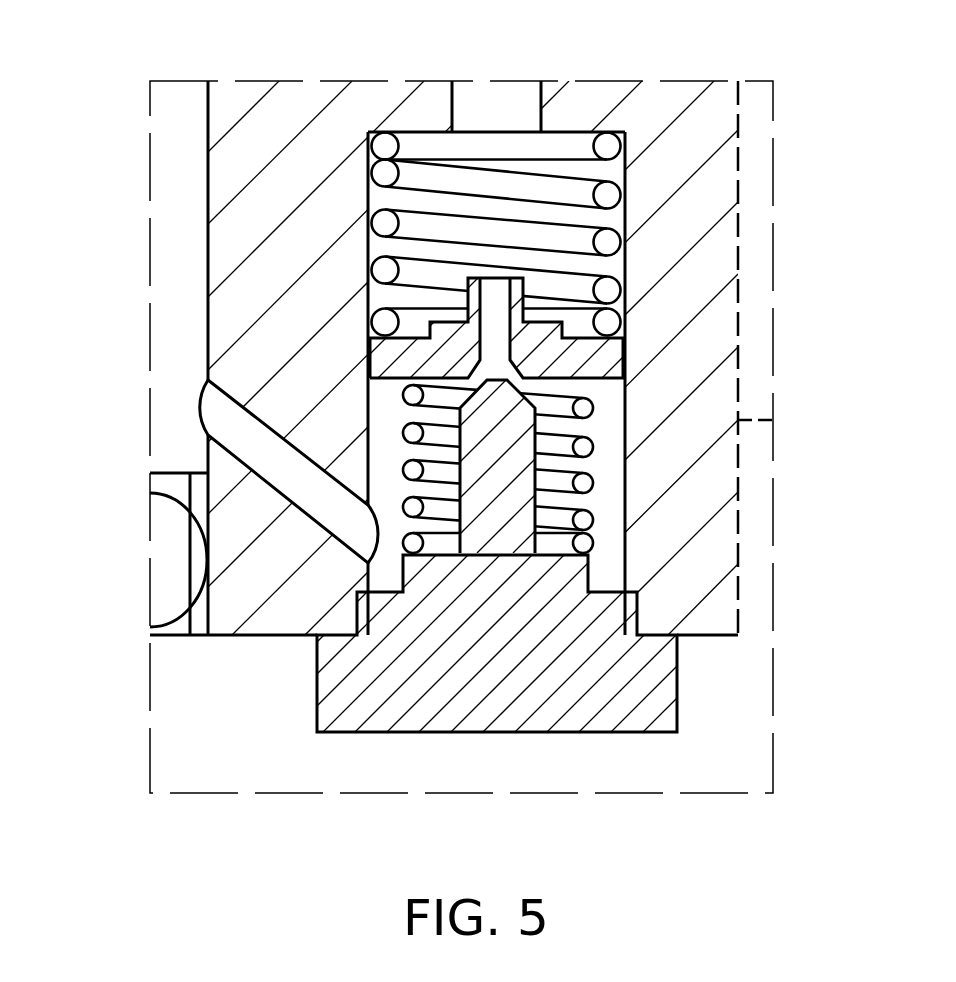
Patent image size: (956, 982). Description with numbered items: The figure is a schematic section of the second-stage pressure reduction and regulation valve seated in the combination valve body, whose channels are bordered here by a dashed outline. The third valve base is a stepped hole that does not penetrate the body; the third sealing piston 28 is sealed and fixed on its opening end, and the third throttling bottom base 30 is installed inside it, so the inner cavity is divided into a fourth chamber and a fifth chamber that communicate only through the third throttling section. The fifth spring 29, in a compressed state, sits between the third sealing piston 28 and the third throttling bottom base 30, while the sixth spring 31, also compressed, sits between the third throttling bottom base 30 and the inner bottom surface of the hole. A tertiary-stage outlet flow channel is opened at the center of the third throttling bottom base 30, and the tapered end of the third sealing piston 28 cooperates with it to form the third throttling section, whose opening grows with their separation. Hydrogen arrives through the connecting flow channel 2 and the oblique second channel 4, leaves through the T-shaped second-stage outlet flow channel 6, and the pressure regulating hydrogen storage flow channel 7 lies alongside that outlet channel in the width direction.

The connecting flow channel 2 is at (197, 467).
The second channel 4 is at (220, 405).
The second-stage outlet flow channel 6 is at (510, 100).
The pressure regulating hydrogen storage flow channel 7 is at (773, 100).
The third sealing piston 28 is at (632, 720).
The fifth spring 29 is at (583, 447).
The third throttling bottom base 30 is at (587, 358).
The sixth spring 31 is at (608, 243).